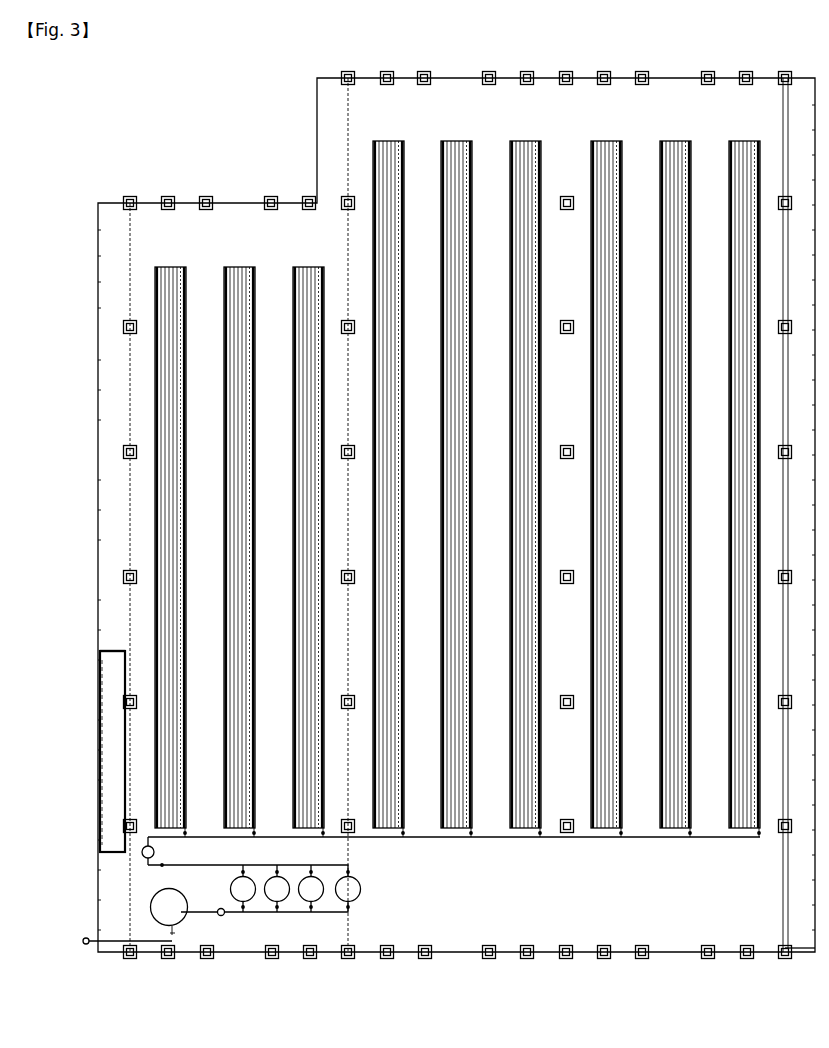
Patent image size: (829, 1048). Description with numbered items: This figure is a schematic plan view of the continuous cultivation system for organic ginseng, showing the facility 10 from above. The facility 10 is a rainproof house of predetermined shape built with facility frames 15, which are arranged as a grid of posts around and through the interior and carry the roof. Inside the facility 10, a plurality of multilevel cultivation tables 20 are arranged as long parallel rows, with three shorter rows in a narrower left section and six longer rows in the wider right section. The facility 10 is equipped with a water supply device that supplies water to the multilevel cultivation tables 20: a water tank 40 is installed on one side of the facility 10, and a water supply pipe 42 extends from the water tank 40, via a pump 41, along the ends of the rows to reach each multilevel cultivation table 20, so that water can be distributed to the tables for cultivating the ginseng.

The facility 10 is at (96, 756).
The facility frame 15 is at (128, 650).
The multilevel cultivation table 20 is at (218, 530).
The water tank 40 is at (276, 902).
The pump 41 is at (142, 852).
The water supply pipe 42 is at (418, 838).